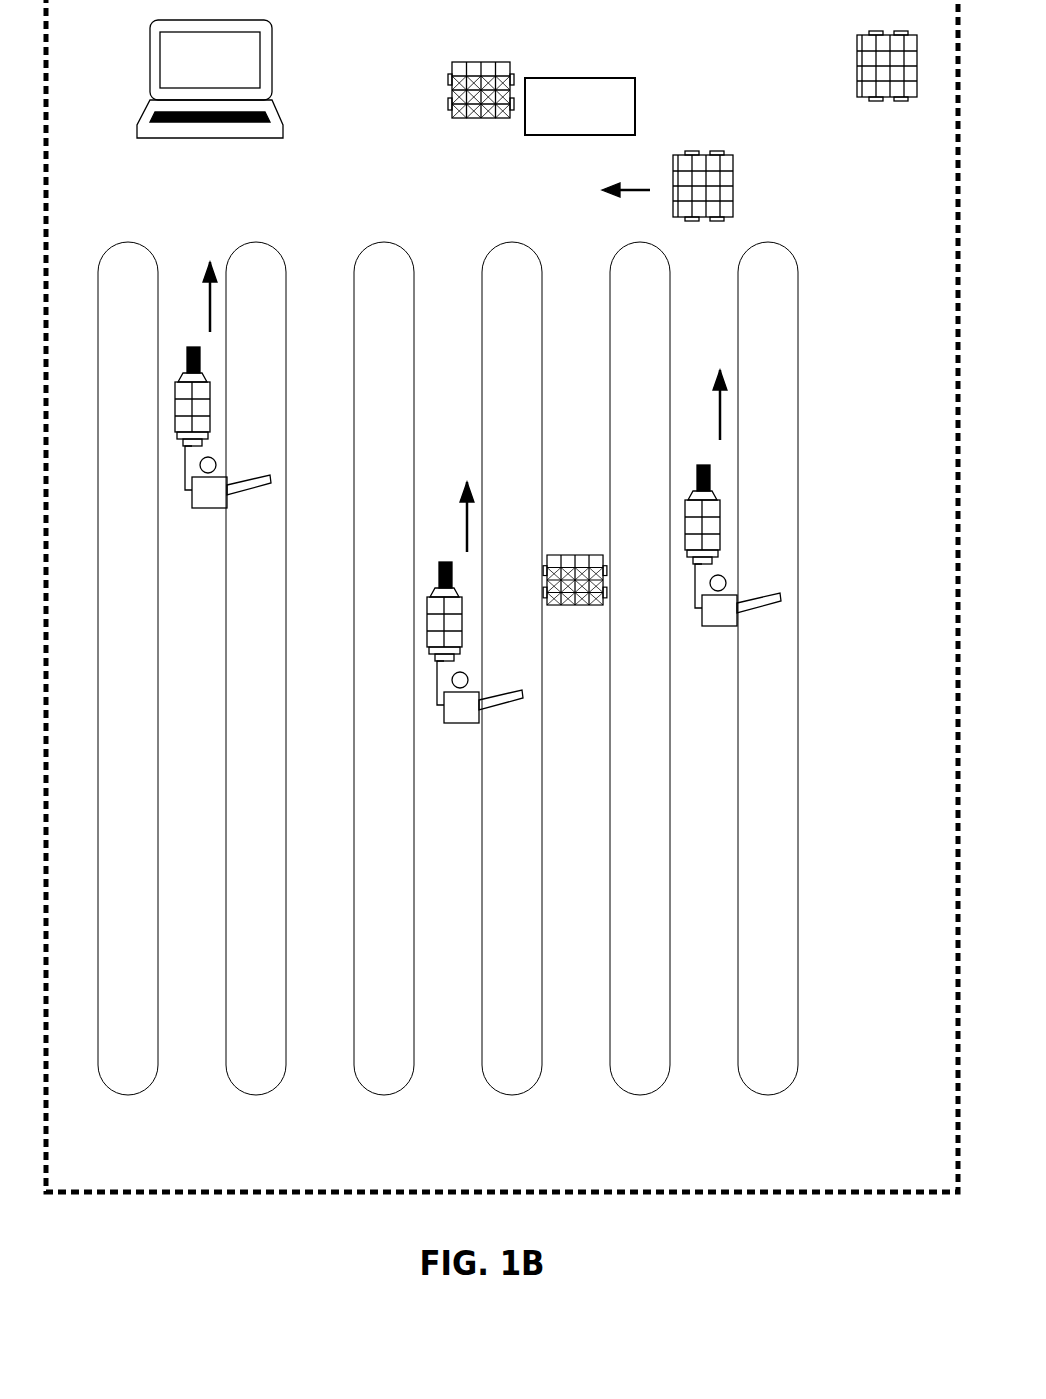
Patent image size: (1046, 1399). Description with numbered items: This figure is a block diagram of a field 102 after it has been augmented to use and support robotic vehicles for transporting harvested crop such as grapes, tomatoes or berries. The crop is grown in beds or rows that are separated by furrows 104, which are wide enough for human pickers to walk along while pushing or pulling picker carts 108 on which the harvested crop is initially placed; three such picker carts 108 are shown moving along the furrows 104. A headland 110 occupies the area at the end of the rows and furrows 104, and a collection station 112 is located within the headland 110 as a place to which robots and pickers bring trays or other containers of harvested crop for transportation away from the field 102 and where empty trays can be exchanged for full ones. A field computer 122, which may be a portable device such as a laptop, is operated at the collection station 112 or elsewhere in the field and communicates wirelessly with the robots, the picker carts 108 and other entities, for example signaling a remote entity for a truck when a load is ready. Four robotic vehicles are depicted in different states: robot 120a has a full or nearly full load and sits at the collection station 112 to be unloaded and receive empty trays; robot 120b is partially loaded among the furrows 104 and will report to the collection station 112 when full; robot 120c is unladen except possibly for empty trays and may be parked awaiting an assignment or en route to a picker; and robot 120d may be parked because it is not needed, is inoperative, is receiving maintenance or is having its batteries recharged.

The field 102 is at (628, 1191).
The furrows 104 is at (192, 1063).
The picker carts 108 is at (692, 500).
The headland 110 is at (447, 1171).
The collection station 112 is at (580, 106).
The robot 120a is at (481, 116).
The robot 120b is at (575, 609).
The robot 120c is at (703, 186).
The robot 120d is at (887, 91).
The field computer 122 is at (210, 106).